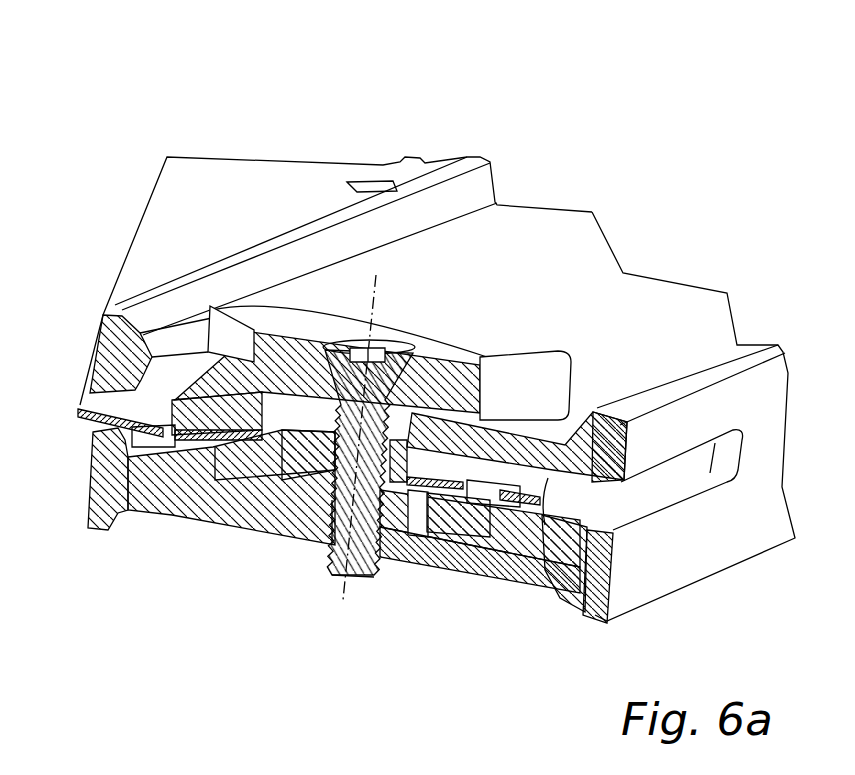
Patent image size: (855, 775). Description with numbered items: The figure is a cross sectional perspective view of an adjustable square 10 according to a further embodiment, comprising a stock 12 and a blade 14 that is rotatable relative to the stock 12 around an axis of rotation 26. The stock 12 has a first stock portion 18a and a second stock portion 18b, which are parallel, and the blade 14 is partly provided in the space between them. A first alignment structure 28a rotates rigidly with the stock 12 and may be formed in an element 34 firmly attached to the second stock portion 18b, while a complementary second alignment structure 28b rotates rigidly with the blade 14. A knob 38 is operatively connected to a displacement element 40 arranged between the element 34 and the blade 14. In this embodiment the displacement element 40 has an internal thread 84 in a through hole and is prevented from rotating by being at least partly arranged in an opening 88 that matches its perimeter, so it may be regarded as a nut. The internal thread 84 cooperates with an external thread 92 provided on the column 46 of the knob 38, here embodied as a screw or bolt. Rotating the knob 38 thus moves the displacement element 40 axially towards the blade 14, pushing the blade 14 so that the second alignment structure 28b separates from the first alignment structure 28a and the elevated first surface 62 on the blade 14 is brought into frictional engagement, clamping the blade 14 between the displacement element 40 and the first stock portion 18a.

The square 10 is at (199, 122).
The blade 14 is at (157, 278).
The stock 12 is at (587, 291).
The axis of rotation 26 is at (372, 310).
The knob 38 is at (485, 344).
The first stock portion 18a is at (553, 450).
The first surface 62 is at (218, 397).
The opening 88 is at (247, 497).
The displacement element 40 is at (293, 497).
The internal thread 84 is at (318, 478).
The external thread 92 is at (333, 500).
The column 46 is at (360, 525).
The second stock portion 18b is at (412, 548).
The element 34 is at (523, 535).
The first alignment structure 28a is at (542, 515).
The second alignment structure 28b is at (560, 518).